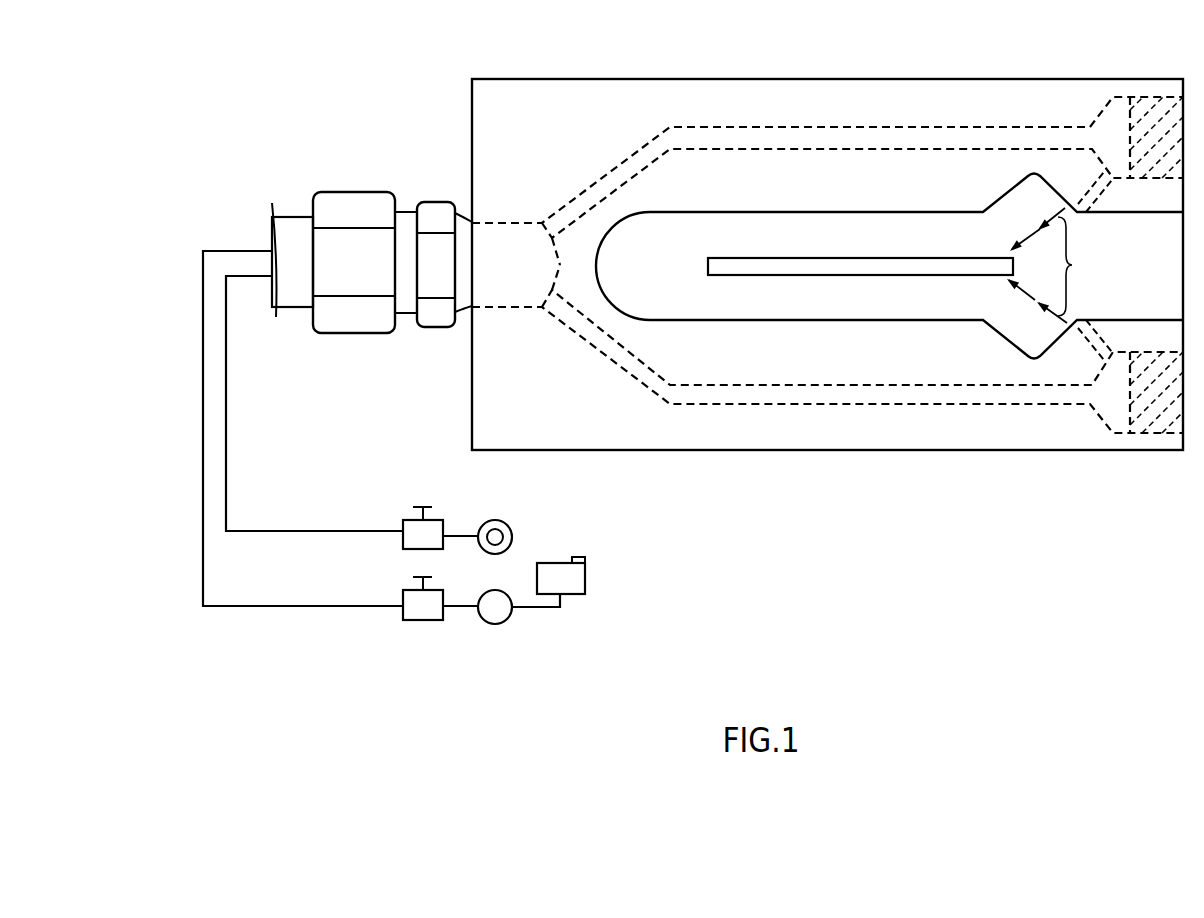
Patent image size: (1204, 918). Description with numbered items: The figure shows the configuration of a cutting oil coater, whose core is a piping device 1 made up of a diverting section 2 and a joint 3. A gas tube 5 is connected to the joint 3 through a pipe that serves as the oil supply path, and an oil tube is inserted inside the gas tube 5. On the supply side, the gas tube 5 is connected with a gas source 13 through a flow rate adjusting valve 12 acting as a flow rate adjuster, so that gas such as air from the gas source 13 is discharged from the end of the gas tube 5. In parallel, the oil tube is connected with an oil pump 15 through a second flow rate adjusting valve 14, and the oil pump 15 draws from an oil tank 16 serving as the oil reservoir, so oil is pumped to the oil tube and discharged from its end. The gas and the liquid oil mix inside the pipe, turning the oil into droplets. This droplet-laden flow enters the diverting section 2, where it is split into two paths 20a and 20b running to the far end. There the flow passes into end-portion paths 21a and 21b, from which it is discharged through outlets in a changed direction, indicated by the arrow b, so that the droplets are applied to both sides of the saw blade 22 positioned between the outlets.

The piping device 1 is at (866, 52).
The diverting section 2 is at (942, 79).
The joint 3 is at (372, 212).
The gas tube 5 is at (289, 217).
The flow rate adjusting valve 12 is at (437, 520).
The gas source 13 is at (498, 520).
The flow rate adjusting valve 14 is at (420, 622).
The oil pump 15 is at (493, 626).
The oil tank 16 is at (577, 597).
The path 20a is at (993, 137).
The path 20b is at (938, 395).
The path 21a is at (1105, 182).
The path 21b is at (1105, 348).
The saw blade 22 is at (806, 273).